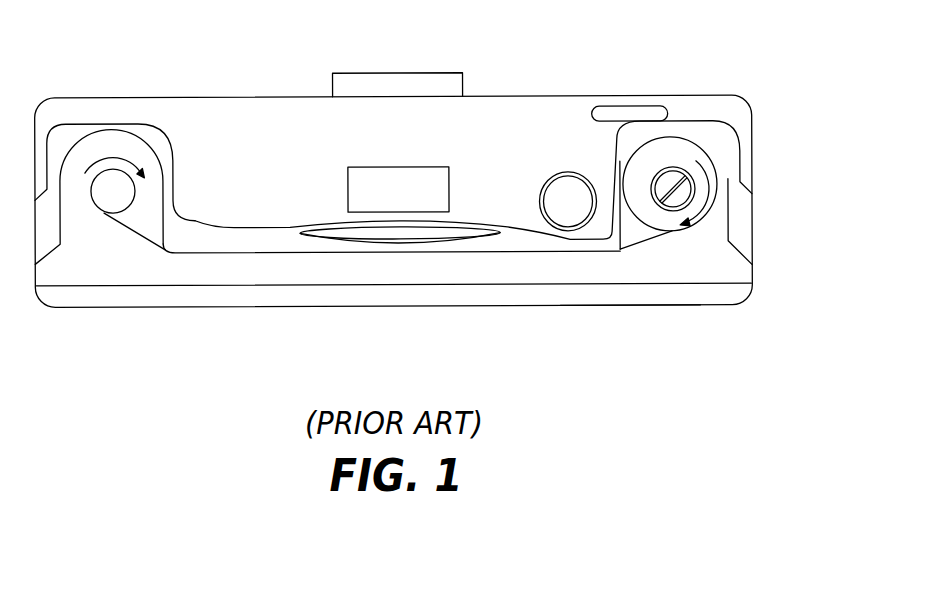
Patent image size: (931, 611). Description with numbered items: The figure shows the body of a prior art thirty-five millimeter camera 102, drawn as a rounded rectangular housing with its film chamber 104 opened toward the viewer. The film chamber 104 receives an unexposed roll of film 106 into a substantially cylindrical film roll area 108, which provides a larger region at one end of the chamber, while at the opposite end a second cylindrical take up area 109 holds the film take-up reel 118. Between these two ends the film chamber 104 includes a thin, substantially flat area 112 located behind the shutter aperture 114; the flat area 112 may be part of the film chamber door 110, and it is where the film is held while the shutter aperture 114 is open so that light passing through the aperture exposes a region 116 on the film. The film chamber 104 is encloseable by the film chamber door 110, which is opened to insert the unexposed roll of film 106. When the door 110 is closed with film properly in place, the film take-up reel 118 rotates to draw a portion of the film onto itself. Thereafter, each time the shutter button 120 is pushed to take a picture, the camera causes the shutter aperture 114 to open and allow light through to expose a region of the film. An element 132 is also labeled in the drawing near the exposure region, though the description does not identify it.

The 35 millimeter camera 102 is at (668, 57).
The film chamber 104 is at (185, 265).
The unexposed roll of film 106 is at (707, 155).
The cylindrical film roll area 108 is at (717, 232).
The cylindrical take up area 109 is at (115, 137).
The film chamber door 110 is at (615, 290).
The flat area 112 is at (307, 273).
The shutter aperture 114 is at (379, 200).
The region on the film 116 is at (400, 253).
The film take-up reel 118 is at (103, 211).
The shutter button 120 is at (552, 180).
The channel upper boundary 132 is at (320, 222).